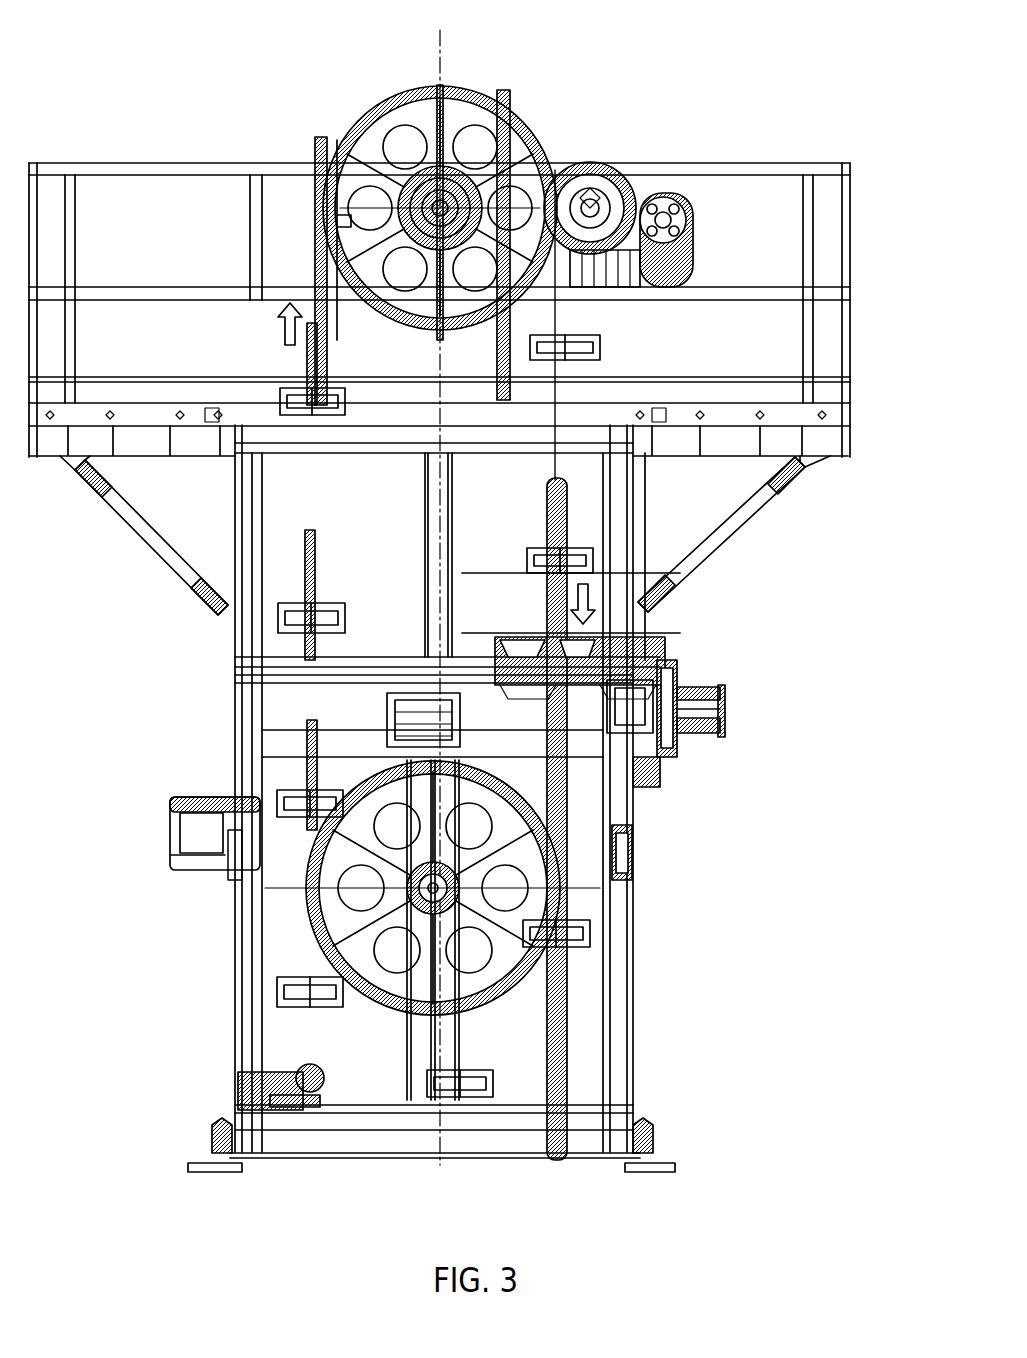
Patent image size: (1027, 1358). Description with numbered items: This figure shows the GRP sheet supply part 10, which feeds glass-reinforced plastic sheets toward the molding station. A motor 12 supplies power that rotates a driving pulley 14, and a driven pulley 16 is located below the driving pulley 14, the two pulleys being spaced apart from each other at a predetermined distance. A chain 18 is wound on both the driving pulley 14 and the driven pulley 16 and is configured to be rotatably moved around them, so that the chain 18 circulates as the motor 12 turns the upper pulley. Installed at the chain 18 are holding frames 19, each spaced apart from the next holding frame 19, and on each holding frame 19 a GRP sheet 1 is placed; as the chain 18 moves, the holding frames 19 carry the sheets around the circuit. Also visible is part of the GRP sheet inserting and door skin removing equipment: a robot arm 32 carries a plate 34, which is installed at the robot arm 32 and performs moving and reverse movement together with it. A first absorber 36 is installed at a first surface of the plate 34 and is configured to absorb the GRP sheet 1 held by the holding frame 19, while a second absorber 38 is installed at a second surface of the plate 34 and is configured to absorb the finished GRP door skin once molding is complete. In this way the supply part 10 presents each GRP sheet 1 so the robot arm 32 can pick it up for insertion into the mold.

The GRP sheet 1 is at (848, 407).
The GRP sheet supply part 10 is at (856, 147).
The motor 12 is at (585, 165).
The driving pulley 14 is at (370, 112).
The driven pulley 16 is at (520, 985).
The chain 18 is at (320, 268).
The holding frame 19 is at (293, 388).
The robot arm 32 is at (727, 707).
The plate 34 is at (683, 727).
The first absorber 36 is at (490, 635).
The second absorber 38 is at (650, 790).